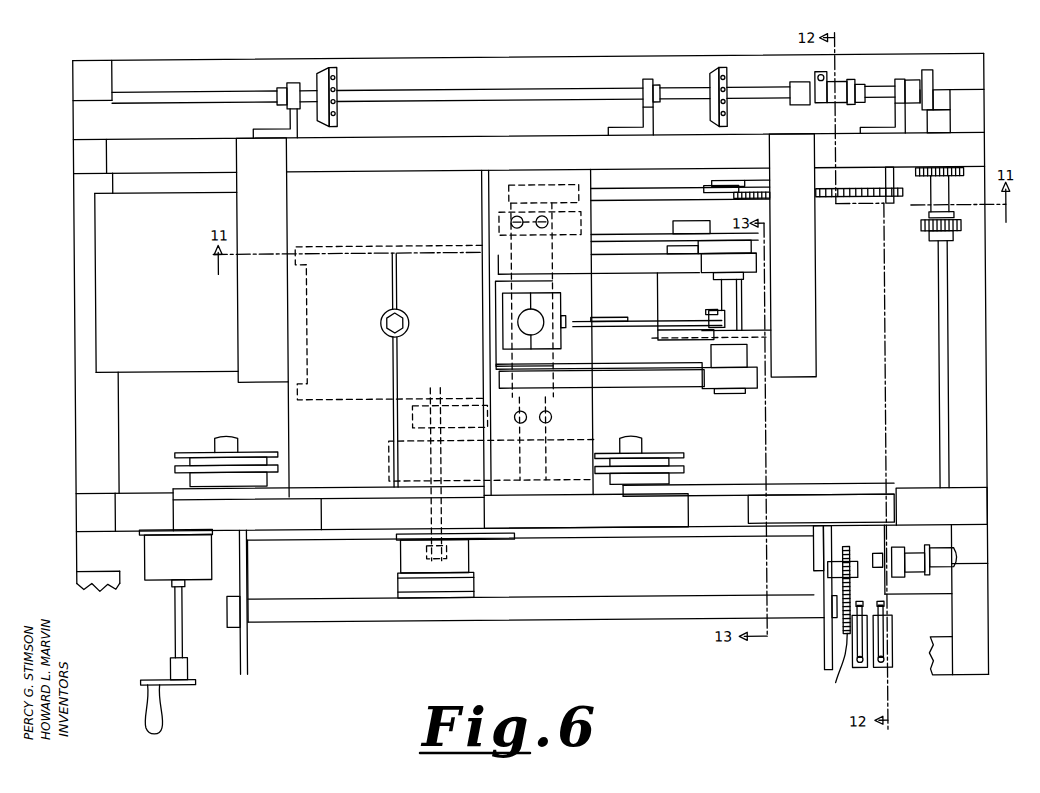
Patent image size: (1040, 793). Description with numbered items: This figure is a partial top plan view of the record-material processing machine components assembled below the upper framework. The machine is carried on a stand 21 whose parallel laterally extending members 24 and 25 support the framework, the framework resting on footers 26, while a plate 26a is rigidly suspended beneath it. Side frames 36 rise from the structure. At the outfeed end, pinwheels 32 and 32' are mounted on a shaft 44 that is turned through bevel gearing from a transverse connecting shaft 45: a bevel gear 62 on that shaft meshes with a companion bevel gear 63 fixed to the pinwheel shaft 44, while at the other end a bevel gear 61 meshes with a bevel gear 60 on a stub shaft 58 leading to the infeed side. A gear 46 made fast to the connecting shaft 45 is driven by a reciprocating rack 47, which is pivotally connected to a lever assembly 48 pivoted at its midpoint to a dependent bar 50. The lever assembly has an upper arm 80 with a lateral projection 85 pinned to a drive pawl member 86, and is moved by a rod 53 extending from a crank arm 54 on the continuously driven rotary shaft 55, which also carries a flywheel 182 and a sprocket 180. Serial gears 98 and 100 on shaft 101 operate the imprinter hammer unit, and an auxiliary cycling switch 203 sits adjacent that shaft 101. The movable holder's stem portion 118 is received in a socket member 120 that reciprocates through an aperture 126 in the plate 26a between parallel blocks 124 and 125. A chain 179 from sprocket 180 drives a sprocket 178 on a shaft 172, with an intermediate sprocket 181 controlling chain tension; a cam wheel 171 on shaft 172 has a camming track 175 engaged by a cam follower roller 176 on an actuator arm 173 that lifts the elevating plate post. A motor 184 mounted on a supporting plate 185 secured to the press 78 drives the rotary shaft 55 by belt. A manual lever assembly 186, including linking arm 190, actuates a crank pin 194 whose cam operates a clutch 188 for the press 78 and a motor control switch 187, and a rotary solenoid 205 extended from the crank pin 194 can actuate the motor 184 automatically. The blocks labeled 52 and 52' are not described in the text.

The stand 21 is at (990, 573).
The laterally extending member 24 is at (172, 141).
The laterally extending member 25 is at (148, 490).
The footer 26 is at (990, 534).
The plate 26a is at (290, 415).
The outfeed pinwheel 32 is at (734, 92).
The outfeed pinwheel 32' is at (343, 96).
The side frame 36 is at (242, 675).
The outfeed pinwheel shaft 44 is at (462, 92).
The transverse connecting shaft 45 is at (948, 356).
The gear 46 is at (966, 174).
The reciprocating rack 47 is at (828, 199).
The lever assembly 48 is at (675, 203).
The dependent bar 50 is at (752, 161).
The bearing block 52 is at (806, 256).
The bearing block 52' is at (278, 260).
The rod 53 is at (618, 200).
The crank arm 54 is at (505, 207).
The rotary shaft 55 is at (544, 470).
The stub shaft 58 is at (876, 557).
The bevel gear 60 is at (915, 556).
The bevel gear 61 is at (955, 555).
The bevel gear 62 is at (952, 103).
The bevel gear 63 is at (929, 73).
The press 78 is at (326, 402).
The upper arm 80 is at (740, 192).
The lateral projection 85 is at (710, 187).
The drive pawl member 86 is at (725, 183).
The gear 98 is at (845, 549).
The gear 100 is at (833, 664).
The shaft 101 is at (786, 603).
The dependent stem portion 118 is at (531, 322).
The socket member 120 is at (561, 344).
The block 124 is at (606, 270).
The block 125 is at (616, 388).
The aperture 126 is at (592, 363).
The cam wheel 171 is at (702, 344).
The shaft 172 is at (742, 300).
The actuator arm 173 is at (632, 320).
The camming track 175 is at (672, 343).
The cam follower roller 176 is at (709, 322).
The sprocket 178 is at (728, 266).
The chain 179 is at (622, 242).
The sprocket 180 is at (515, 224).
The sprocket 181 is at (674, 228).
The flywheel 182 is at (745, 475).
The motor 184 is at (226, 457).
The supporting plate 185 is at (204, 376).
The lever assembly 186 is at (172, 630).
The motor control switch 187 is at (396, 540).
The clutch 188 is at (412, 418).
The linking arm 190 is at (150, 680).
The crank pin 194 is at (430, 510).
The auxiliary cycling switch 203 is at (890, 634).
The rotary solenoid 205 is at (472, 580).